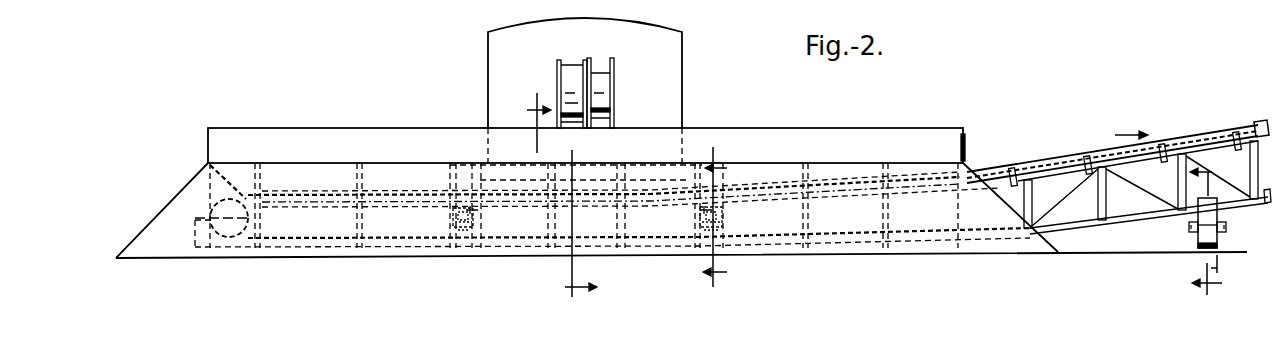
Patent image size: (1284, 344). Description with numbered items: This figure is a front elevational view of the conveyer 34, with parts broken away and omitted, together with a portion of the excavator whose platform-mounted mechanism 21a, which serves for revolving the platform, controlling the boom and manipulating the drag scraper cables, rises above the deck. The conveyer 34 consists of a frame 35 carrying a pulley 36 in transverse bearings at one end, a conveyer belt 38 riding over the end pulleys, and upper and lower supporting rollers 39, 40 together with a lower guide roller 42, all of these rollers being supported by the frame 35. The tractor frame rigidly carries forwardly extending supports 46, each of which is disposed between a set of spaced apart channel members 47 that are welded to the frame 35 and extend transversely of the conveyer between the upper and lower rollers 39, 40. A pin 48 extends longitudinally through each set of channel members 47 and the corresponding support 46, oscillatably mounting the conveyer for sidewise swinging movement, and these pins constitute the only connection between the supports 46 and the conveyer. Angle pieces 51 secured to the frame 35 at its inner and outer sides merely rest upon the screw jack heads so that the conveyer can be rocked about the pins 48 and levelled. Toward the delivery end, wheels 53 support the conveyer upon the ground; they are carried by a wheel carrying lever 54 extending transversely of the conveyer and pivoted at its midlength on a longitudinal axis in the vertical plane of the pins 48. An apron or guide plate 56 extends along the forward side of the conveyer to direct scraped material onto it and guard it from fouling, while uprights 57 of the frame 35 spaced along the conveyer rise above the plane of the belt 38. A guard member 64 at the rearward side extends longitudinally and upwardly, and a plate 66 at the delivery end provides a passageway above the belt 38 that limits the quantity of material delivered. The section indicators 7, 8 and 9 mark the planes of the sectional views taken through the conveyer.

The section line 7- 7 is at (727, 217).
The section line 8- 8 is at (1206, 231).
The section line 9- 9 is at (555, 195).
The mechanism 21a is at (619, 92).
The conveyer 34 is at (1144, 208).
The frame 35 is at (1119, 193).
The pulley 36 is at (243, 228).
The conveyer belt 38 is at (1197, 140).
The upper supporting roller 39 is at (373, 199).
The lower supporting roller 40 is at (508, 245).
The lower guide roller 42 is at (278, 232).
The support 46 is at (465, 236).
The channel member 47 is at (478, 215).
The pin 48 is at (455, 222).
The angle piece 51 is at (1140, 166).
The wheel 53 is at (1218, 246).
The wheel carrying lever 54 is at (1227, 221).
The apron or guide plate 56 is at (178, 248).
The upright 57 is at (263, 175).
The guard member 64 is at (286, 136).
The plate 66 is at (968, 143).